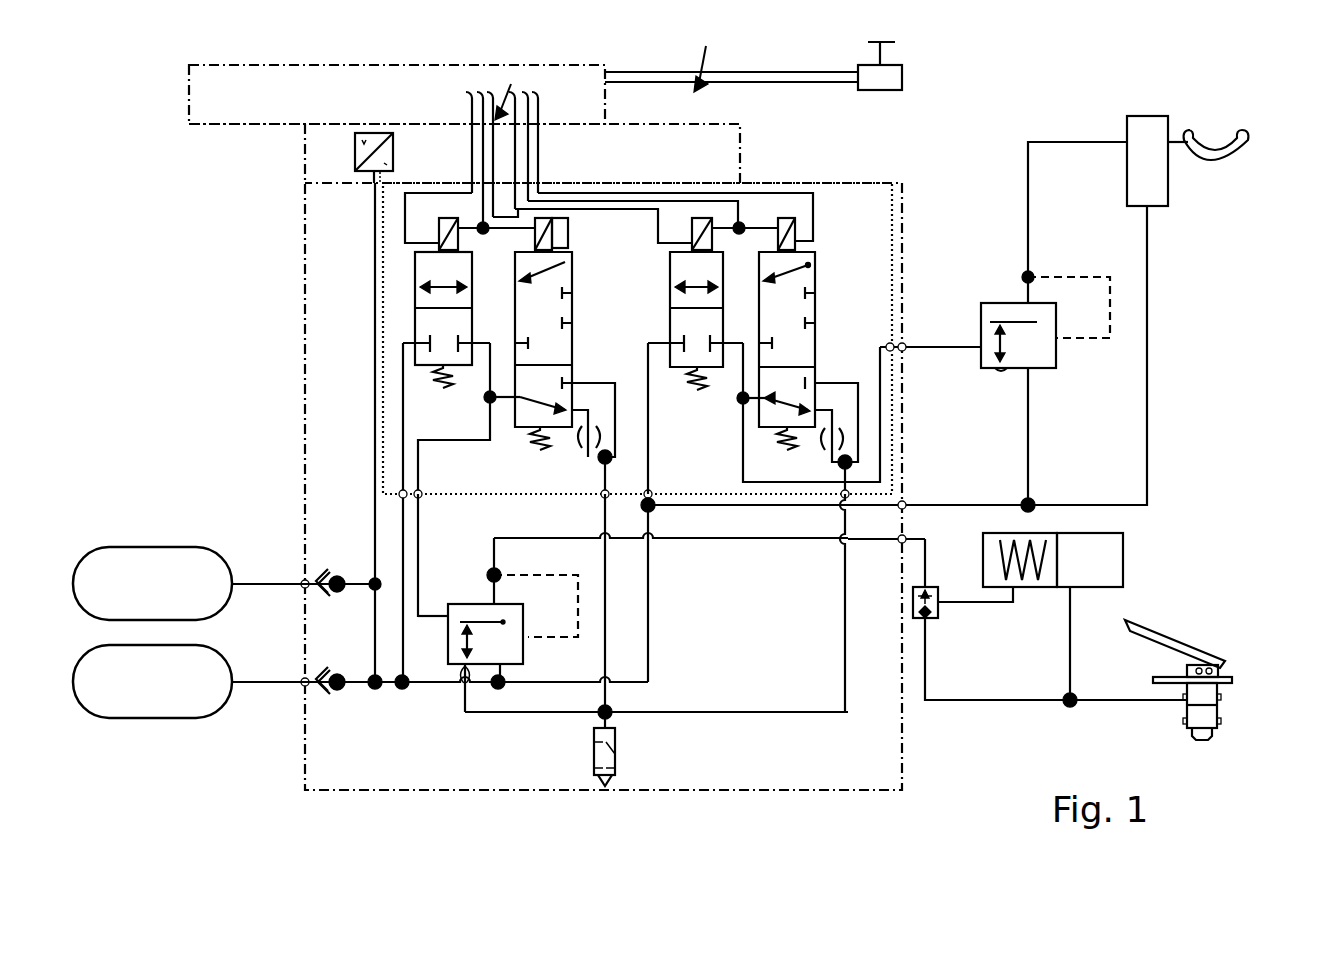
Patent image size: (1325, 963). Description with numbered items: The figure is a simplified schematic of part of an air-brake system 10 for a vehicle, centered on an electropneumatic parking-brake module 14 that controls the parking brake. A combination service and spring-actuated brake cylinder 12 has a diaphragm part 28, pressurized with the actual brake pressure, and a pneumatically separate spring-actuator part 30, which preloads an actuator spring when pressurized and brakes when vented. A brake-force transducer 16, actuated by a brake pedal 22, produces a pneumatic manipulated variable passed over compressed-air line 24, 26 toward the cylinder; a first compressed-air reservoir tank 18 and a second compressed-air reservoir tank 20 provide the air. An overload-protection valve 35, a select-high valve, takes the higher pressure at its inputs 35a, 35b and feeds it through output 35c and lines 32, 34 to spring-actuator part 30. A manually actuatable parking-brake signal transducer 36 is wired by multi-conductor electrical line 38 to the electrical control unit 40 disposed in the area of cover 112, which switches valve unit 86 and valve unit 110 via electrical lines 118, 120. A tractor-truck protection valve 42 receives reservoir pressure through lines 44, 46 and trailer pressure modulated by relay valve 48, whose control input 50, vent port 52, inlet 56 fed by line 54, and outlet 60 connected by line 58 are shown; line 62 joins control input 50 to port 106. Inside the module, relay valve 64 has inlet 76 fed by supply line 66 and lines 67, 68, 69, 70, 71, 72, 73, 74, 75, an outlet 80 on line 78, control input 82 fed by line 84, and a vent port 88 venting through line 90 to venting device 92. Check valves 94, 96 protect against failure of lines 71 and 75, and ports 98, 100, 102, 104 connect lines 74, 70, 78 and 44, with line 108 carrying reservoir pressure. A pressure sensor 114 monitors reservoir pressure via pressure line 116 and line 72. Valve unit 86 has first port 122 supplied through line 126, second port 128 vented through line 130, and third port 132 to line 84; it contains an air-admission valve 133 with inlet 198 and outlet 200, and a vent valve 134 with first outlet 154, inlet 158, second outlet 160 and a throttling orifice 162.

The air-brake system 10 is at (1003, 72).
The combination service and spring-actuated brake cylinder 12 is at (1121, 530).
The parking-brake module 14 is at (903, 730).
The brake-force transducer 16 is at (1222, 668).
The first compressed-air reservoir tank 18 is at (222, 556).
The second compressed-air reservoir tank 20 is at (198, 712).
The brake pedal 22 is at (1172, 642).
The compressed-air line 24 is at (1078, 702).
The compressed-air line 26 is at (1072, 660).
The diaphragm part 28 is at (1124, 566).
The spring-actuator part 30 is at (1010, 533).
The compressed-air line 32 is at (955, 604).
The compressed-air line 34 is at (928, 568).
The overload-protection valve 35 is at (932, 620).
The input 35a is at (912, 612).
The input 35b is at (912, 593).
The output 35c is at (939, 600).
The parking-brake signal transducer 36 is at (903, 74).
The multi-conductor electrical line 38 is at (746, 72).
The electrical control unit 40 is at (519, 66).
The tractor-truck protection valve 42 is at (1188, 104).
The compressed-air line 44 is at (1014, 503).
The compressed-air line 46 is at (1149, 380).
The relay valve 48 is at (1022, 280).
The control input 50 is at (980, 340).
The vent port 52 is at (1002, 372).
The compressed-air line 54 is at (1030, 445).
The inlet 56 is at (1030, 372).
The compressed-air line 58 is at (1030, 205).
The outlet 60 is at (1034, 290).
The compressed-air line 62 is at (912, 352).
The relay valve 64 is at (470, 602).
The compressed-air supply line 66 is at (505, 684).
The compressed-air line 67 is at (416, 688).
The compressed-air line 68 is at (398, 690).
The compressed-air line 69 is at (372, 690).
The compressed-air line 70 is at (307, 690).
The compressed-air line 71 is at (255, 684).
The pressure line 72 is at (373, 654).
The compressed-air line 73 is at (362, 590).
The compressed-air line 74 is at (305, 590).
The compressed-air line 75 is at (248, 586).
The inlet 76 is at (505, 670).
The compressed-air line 78 is at (520, 540).
The outlet 80 is at (500, 594).
The control input 82 is at (446, 612).
The compressed-air line 84 is at (420, 562).
The valve unit 86 is at (496, 496).
The vent port 88 is at (463, 678).
The compressed-air line 90 is at (505, 712).
The venting device 92 is at (616, 750).
The check valve 94 is at (329, 668).
The check valve 96 is at (338, 576).
The port 98 is at (325, 580).
The port 100 is at (303, 676).
The port 102 is at (905, 536).
The port 104 is at (906, 500).
The port 106 is at (904, 345).
The compressed-air line 108 is at (662, 508).
The valve unit 110 is at (652, 492).
The cover 112 is at (742, 143).
The pressure sensor 114 is at (394, 152).
The pressure line 116 is at (372, 410).
The electrical line 118 is at (461, 155).
The electrical line 120 is at (661, 157).
The first port 122 is at (401, 500).
The compressed-air line 126 is at (405, 425).
The second port 128 is at (600, 490).
The compressed-air line 130 is at (607, 628).
The third port 132 is at (420, 488).
The air-admission valve 133 is at (458, 246).
The vent valve 134 is at (569, 233).
The first outlet 154 is at (576, 412).
The inlet 158 is at (496, 402).
The second outlet 160 is at (575, 378).
The orifice 162 is at (579, 434).
The inlet 198 is at (414, 338).
The outlet 200 is at (473, 340).